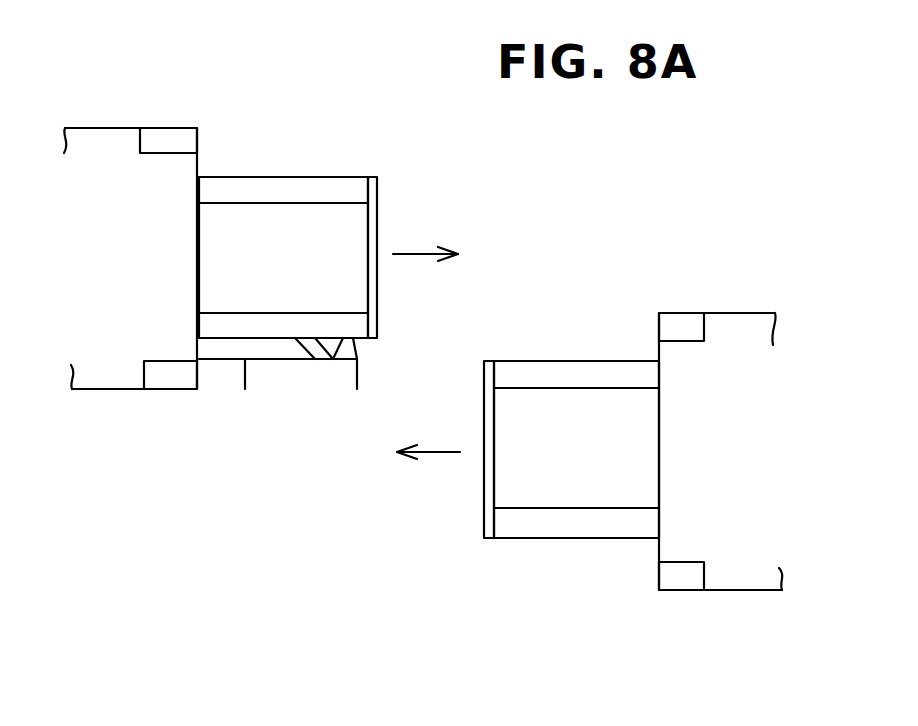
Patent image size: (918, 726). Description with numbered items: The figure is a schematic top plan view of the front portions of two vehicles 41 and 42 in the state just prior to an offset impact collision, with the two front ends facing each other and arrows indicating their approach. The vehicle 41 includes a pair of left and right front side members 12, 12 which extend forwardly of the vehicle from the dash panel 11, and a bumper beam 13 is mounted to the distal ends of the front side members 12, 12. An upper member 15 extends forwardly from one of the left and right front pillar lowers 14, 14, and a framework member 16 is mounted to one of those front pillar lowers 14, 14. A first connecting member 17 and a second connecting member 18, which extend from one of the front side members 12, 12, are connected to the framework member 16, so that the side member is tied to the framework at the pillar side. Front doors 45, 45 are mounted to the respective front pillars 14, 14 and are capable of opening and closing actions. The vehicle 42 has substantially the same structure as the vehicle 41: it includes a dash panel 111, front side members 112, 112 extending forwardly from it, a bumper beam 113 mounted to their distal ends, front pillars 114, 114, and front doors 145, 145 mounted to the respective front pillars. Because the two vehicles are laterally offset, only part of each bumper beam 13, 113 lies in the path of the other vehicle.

The vehicle 41 is at (232, 100).
The vehicle 42 is at (705, 285).
The dash panel 11 is at (197, 255).
The front side member 12 is at (287, 177).
The bumper beam 13 is at (377, 203).
The front pillar lower 14 is at (165, 128).
The upper member 15 is at (218, 389).
The framework member 16 is at (302, 389).
The first connecting member 17 is at (360, 358).
The second connecting member 18 is at (302, 348).
The front door 45 is at (88, 128).
The dash panel 111 is at (660, 452).
The front side member 112 is at (580, 361).
The bumper beam 113 is at (484, 478).
The front pillar 114 is at (675, 313).
The front door 145 is at (755, 313).